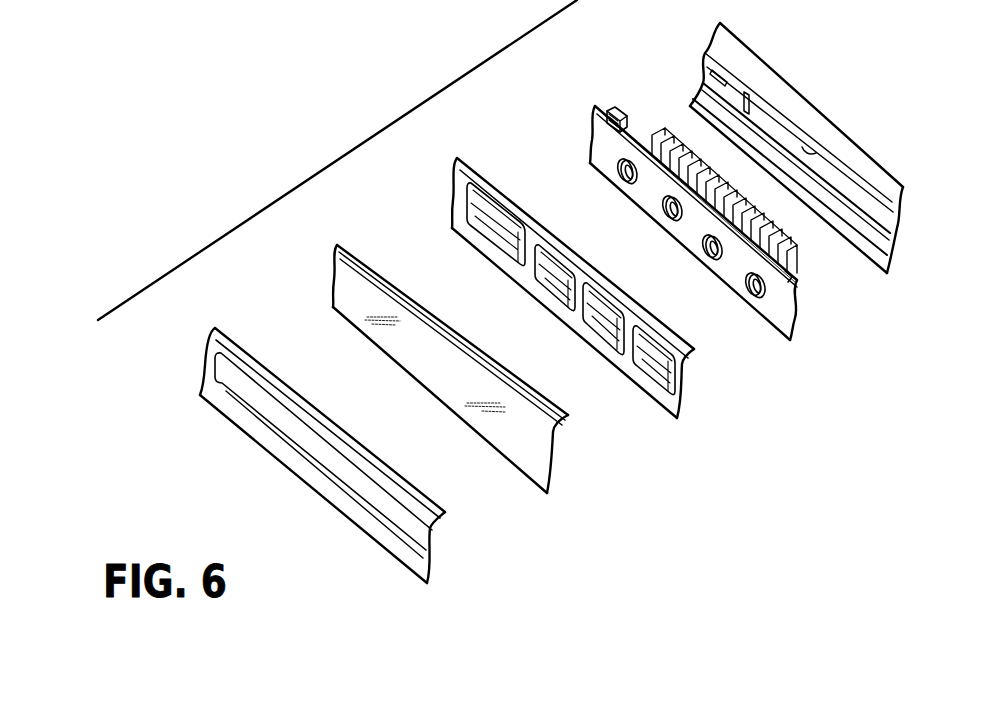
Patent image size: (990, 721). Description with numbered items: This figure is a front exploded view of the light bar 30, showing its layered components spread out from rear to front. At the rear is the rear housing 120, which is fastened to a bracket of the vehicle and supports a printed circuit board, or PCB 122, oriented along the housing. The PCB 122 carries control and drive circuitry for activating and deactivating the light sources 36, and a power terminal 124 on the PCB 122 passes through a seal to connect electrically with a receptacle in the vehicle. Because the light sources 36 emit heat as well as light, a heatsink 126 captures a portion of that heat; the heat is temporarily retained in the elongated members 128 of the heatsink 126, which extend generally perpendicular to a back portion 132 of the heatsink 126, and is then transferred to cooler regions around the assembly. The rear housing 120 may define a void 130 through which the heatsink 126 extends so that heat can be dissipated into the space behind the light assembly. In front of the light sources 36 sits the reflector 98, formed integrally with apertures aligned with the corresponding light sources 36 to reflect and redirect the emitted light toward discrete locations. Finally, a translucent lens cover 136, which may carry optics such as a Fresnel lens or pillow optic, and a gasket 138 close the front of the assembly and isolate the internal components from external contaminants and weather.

The light bar 30 is at (358, 150).
The light sources 36 is at (667, 220).
The reflector 98 is at (512, 243).
The rear housing 120 is at (862, 152).
The printed circuit board (PCB) 122 is at (744, 269).
The power terminal 124 is at (609, 110).
The heatsink 126 is at (651, 138).
The elongated members 128 is at (690, 140).
The void 130 is at (808, 150).
The back portion 132 is at (786, 270).
The translucent lens cover 136 is at (452, 389).
The gasket 138 is at (343, 518).